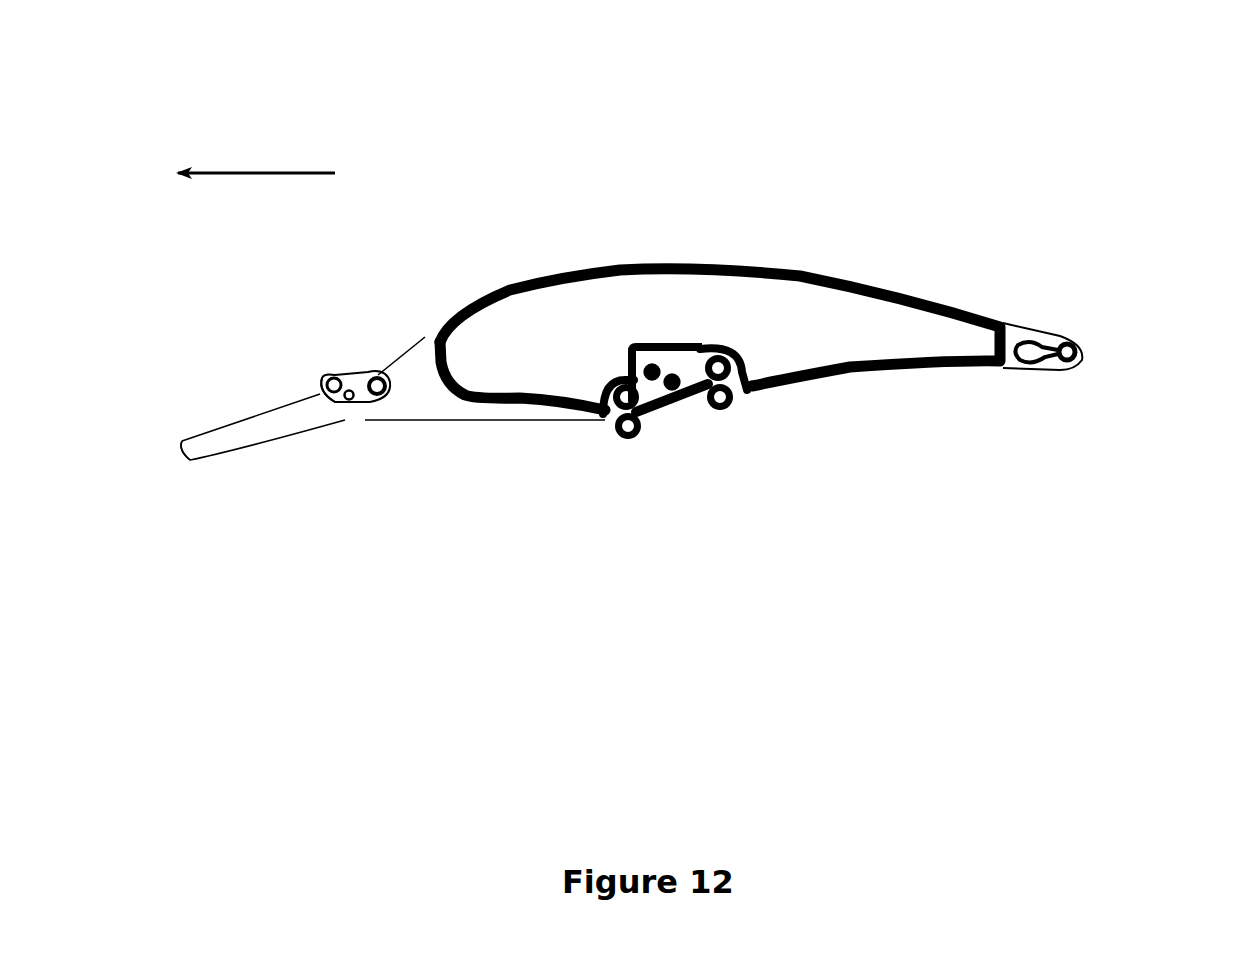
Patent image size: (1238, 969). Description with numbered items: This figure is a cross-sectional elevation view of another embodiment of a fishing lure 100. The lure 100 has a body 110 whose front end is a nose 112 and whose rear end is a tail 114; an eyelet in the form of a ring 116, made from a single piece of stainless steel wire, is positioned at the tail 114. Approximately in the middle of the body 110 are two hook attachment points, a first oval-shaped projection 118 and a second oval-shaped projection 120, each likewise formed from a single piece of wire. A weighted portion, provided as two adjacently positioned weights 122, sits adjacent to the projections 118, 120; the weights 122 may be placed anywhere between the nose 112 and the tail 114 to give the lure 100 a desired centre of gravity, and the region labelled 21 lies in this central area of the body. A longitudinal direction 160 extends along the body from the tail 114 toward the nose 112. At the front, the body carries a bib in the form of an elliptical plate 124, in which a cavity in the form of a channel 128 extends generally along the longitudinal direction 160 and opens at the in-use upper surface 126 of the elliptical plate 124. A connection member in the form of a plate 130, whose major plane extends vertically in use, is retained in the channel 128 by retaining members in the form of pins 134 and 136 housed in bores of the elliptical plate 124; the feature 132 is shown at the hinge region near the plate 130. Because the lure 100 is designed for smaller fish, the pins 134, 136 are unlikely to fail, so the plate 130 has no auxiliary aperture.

The lure 100 is at (290, 105).
The longitudinal direction 160 is at (286, 176).
The body 110 is at (692, 250).
The nose 112 is at (418, 323).
The tail 114 is at (1008, 318).
The ring 116 is at (1092, 343).
The weight chamber 21 is at (742, 390).
The first oval-shaped projection 118 is at (617, 437).
The second oval-shaped projection 120 is at (718, 417).
The weights 122 is at (663, 392).
The elliptical plate 124 is at (243, 452).
The upper surface 126 is at (215, 433).
The channel 128 is at (384, 406).
The plate 130 is at (332, 365).
The hinge opening 132 is at (328, 385).
The pin 134 is at (378, 372).
The pin 136 is at (349, 402).